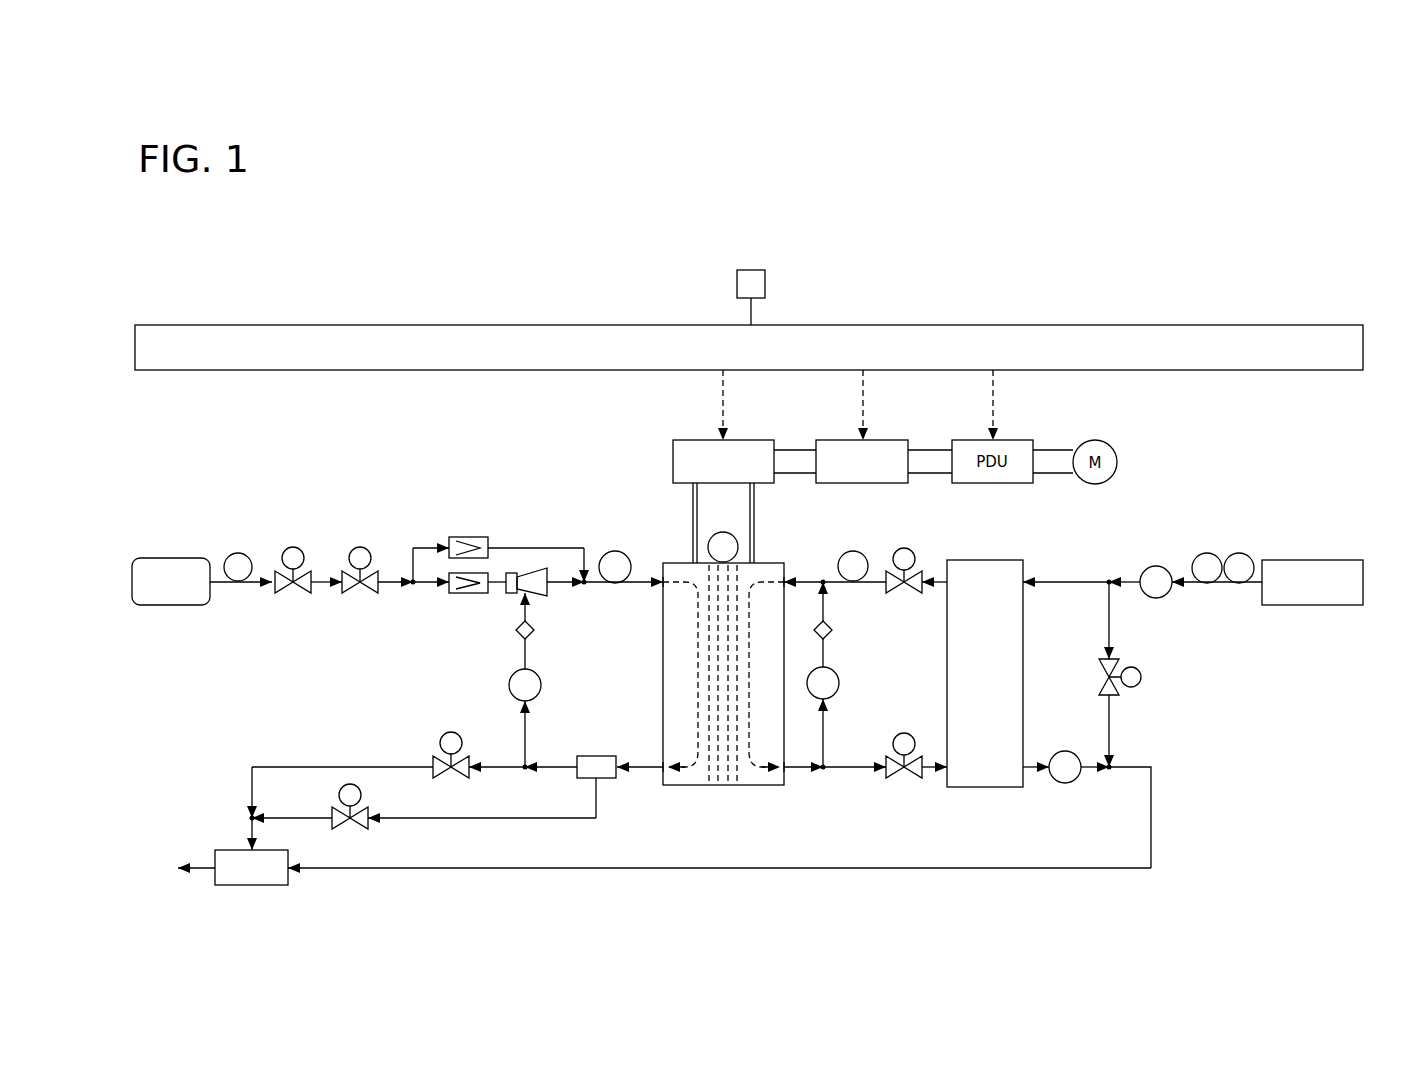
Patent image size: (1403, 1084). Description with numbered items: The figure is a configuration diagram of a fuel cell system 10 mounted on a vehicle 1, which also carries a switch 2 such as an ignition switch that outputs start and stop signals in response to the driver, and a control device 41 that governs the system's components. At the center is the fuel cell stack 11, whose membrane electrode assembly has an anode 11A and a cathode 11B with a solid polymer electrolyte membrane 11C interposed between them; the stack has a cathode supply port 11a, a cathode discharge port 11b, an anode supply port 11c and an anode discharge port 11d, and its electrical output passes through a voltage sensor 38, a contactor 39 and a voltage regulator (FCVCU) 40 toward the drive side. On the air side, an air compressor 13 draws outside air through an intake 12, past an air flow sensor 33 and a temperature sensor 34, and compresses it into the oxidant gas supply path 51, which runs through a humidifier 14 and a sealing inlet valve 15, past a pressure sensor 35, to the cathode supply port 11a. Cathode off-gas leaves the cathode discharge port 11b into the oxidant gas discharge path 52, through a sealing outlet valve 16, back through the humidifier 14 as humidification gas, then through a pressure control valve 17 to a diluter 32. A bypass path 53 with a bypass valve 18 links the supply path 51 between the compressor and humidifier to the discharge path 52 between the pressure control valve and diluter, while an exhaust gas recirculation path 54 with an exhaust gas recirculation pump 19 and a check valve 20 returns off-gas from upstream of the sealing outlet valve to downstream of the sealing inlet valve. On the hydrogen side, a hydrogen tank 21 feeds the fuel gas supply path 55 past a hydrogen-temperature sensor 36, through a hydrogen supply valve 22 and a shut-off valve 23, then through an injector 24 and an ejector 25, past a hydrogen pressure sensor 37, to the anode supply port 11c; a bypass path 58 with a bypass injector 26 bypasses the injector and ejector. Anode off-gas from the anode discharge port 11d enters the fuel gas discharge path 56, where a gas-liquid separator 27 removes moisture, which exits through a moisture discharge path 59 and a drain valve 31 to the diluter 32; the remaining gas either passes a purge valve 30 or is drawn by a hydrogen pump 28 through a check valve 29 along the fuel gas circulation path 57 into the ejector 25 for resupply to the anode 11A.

The vehicle 1 is at (1280, 245).
The fuel cell system 10 is at (1178, 295).
The switch 2 is at (737, 285).
The control device 41 is at (850, 325).
The contactor 39 is at (740, 440).
The voltage regulator (FCVCU) 40 is at (880, 440).
The voltage sensor 38 is at (733, 532).
The fuel cell stack 11 is at (762, 563).
The fuel electrode (anode) 11A is at (712, 785).
The oxygen electrode (cathode) 11B is at (738, 785).
The solid polymer electrolyte membrane 11C is at (723, 785).
The cathode supply port 11a is at (790, 582).
The cathode discharge port 11b is at (784, 767).
The anode supply port 11c is at (660, 590).
The anode discharge port 11d is at (663, 767).
The intake 12 is at (1313, 560).
The air compressor 13 is at (1158, 566).
The humidifier 14 is at (985, 560).
The sealing inlet valve 15 is at (904, 548).
The sealing outlet valve 16 is at (904, 733).
The pressure control valve 17 is at (1065, 751).
The bypass valve 18 is at (1141, 677).
The exhaust gas recirculation pump 19 is at (839, 683).
The check valve 20 is at (832, 630).
The hydrogen tank 21 is at (168, 558).
The hydrogen supply valve 22 is at (293, 547).
The shut-off valve 23 is at (360, 547).
The injector 24 is at (470, 593).
The ejector 25 is at (540, 570).
The bypass injector 26 is at (470, 537).
The gas-liquid separator 27 is at (600, 756).
The hydrogen pump 28 is at (541, 685).
The check valve 29 is at (534, 630).
The purge valve 30 is at (451, 732).
The drain valve 31 is at (361, 795).
The diluter 32 is at (232, 850).
The air flow sensor 33 is at (1248, 556).
The temperature sensor 34 is at (1210, 553).
The pressure sensor 35 is at (855, 551).
The hydrogen-temperature sensor 36 is at (247, 553).
The hydrogen pressure sensor 37 is at (615, 551).
The oxidant gas supply path 51 is at (1100, 582).
The oxidant gas discharge path 52 is at (855, 767).
The bypass path 53 is at (1109, 615).
The exhaust gas recirculation path 54 is at (823, 740).
The fuel gas supply path 55 is at (215, 580).
The fuel gas discharge path 56 is at (500, 767).
The fuel gas circulation path 57 is at (527, 745).
The bypass path 58 is at (500, 548).
The moisture discharge path 59 is at (443, 818).